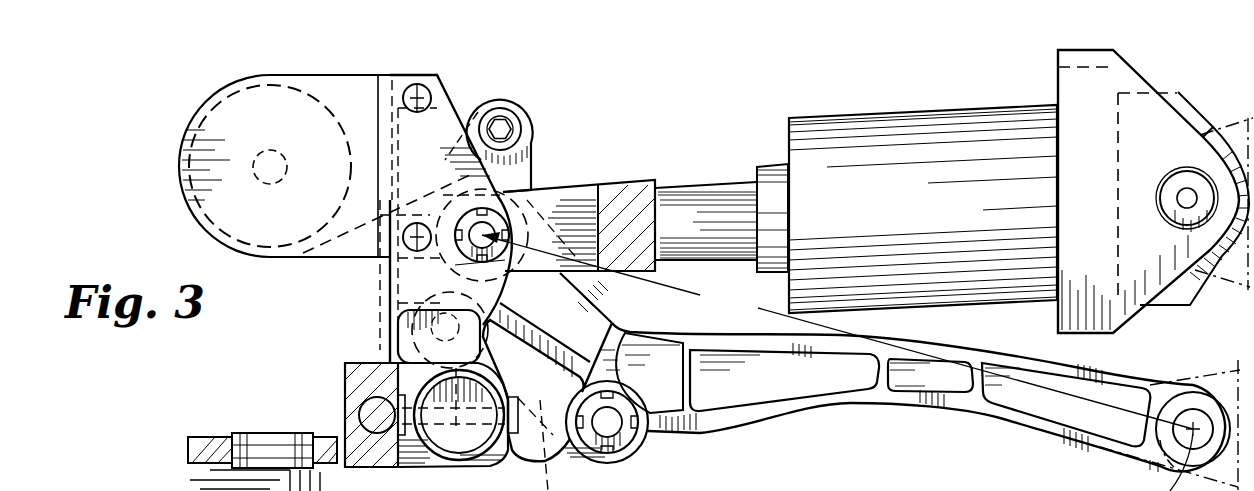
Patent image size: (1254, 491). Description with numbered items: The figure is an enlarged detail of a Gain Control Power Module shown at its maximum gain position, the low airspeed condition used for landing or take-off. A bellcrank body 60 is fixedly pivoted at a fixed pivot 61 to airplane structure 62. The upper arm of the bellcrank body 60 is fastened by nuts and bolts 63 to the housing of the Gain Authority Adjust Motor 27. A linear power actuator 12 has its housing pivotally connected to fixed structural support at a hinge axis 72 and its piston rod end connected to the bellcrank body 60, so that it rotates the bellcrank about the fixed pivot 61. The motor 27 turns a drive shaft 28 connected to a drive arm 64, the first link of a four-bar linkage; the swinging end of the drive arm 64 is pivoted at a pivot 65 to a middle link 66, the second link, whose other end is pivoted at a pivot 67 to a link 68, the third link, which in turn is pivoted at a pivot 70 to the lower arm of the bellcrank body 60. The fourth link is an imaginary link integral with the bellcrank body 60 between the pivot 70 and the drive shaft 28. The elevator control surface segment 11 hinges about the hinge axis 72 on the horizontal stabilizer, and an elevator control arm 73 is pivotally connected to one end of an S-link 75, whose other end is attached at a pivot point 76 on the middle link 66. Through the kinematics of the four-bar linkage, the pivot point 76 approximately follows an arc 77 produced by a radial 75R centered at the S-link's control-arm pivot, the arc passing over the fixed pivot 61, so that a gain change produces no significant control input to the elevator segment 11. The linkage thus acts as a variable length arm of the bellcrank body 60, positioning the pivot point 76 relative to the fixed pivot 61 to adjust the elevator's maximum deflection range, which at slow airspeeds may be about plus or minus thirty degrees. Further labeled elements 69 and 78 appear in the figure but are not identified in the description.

The elevator control surface segment 11 is at (1235, 140).
The linear power actuator 12 is at (852, 118).
The GAAM (Gain Authority Adjust Motor) 27 is at (213, 223).
The drive shaft 28 is at (266, 173).
The bellcrank body 60 is at (621, 483).
The fixed pivot 61 is at (483, 400).
The airplane structure 62 is at (1135, 83).
The nuts and bolts 63 is at (440, 85).
The drive arm 64 is at (480, 100).
The pivot 65 is at (505, 128).
The middle link 66 is at (532, 176).
The pivot 67 is at (398, 333).
The link 68 is at (563, 482).
The mounting element 69 is at (420, 490).
The pivot 70 is at (612, 425).
The hinge axis 72 is at (1185, 198).
The elevator control arm 73 is at (1227, 378).
The S-link 75 is at (835, 387).
The radial 75R is at (837, 330).
The pivot point 76 is at (482, 235).
The arc 77 is at (506, 293).
The mounting element 78 is at (488, 483).